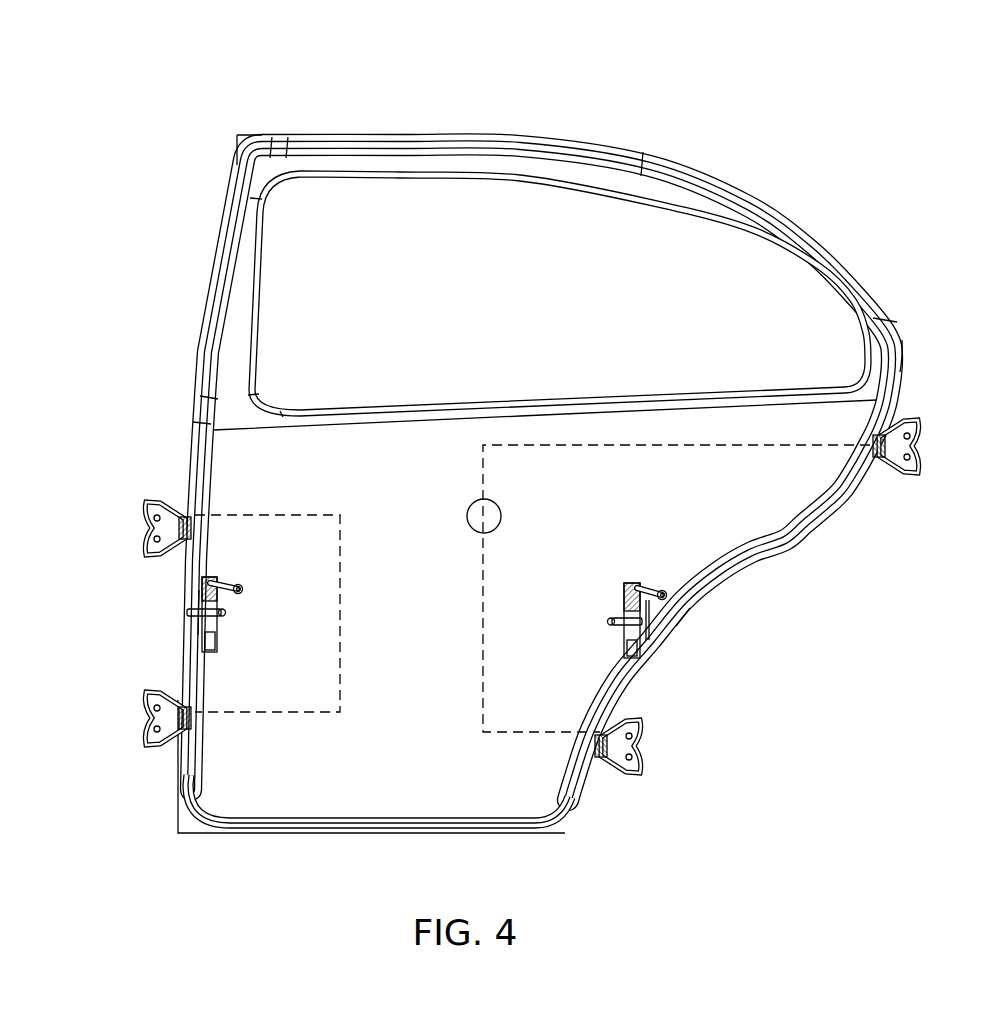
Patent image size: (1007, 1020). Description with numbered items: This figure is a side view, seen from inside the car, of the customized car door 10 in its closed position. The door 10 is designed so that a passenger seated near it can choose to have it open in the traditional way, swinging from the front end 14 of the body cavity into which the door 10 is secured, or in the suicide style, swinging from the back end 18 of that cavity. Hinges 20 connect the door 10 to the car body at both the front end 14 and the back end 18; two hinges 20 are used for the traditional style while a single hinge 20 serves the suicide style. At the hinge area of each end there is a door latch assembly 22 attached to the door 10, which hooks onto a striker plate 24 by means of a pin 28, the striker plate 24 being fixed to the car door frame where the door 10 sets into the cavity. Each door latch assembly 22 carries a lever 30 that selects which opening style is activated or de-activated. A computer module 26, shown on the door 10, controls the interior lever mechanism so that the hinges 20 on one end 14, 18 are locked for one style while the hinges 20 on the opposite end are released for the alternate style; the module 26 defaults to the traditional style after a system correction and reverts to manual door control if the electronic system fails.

The car door 10 is at (776, 108).
The front end 14 is at (243, 348).
The back end 18 is at (905, 353).
The hinge 20 is at (145, 530).
The door latch assembly 22 is at (218, 645).
The striker plate 24 is at (184, 612).
The computer module 26 is at (501, 516).
The pin 28 is at (226, 613).
The lever 30 is at (243, 586).